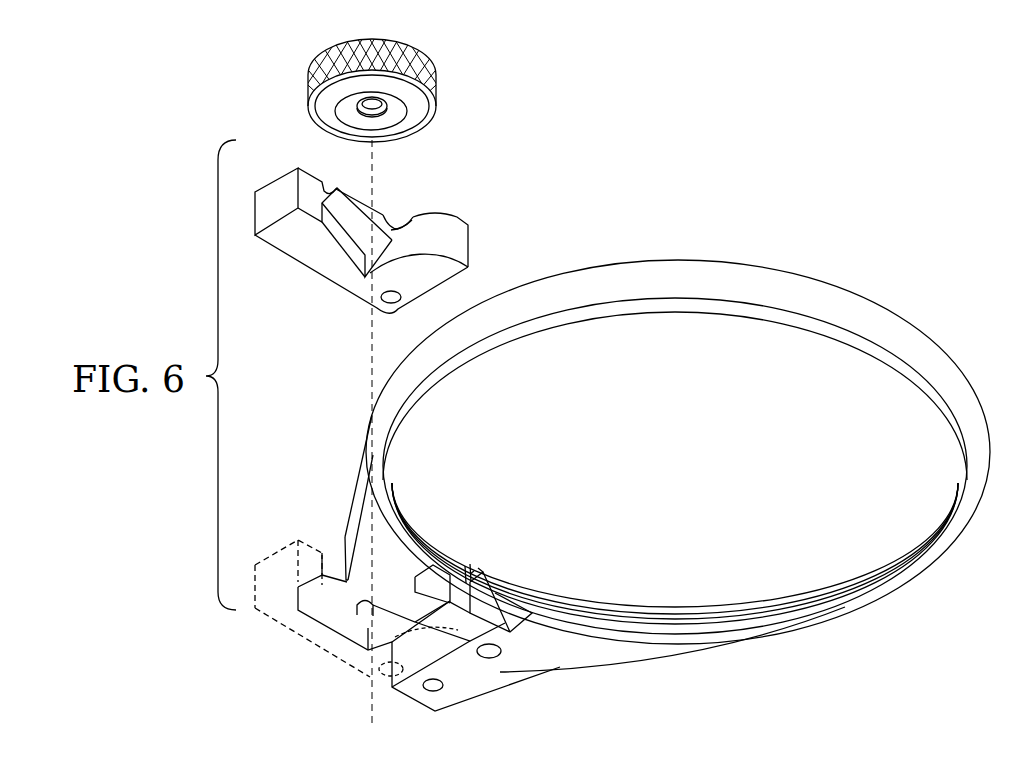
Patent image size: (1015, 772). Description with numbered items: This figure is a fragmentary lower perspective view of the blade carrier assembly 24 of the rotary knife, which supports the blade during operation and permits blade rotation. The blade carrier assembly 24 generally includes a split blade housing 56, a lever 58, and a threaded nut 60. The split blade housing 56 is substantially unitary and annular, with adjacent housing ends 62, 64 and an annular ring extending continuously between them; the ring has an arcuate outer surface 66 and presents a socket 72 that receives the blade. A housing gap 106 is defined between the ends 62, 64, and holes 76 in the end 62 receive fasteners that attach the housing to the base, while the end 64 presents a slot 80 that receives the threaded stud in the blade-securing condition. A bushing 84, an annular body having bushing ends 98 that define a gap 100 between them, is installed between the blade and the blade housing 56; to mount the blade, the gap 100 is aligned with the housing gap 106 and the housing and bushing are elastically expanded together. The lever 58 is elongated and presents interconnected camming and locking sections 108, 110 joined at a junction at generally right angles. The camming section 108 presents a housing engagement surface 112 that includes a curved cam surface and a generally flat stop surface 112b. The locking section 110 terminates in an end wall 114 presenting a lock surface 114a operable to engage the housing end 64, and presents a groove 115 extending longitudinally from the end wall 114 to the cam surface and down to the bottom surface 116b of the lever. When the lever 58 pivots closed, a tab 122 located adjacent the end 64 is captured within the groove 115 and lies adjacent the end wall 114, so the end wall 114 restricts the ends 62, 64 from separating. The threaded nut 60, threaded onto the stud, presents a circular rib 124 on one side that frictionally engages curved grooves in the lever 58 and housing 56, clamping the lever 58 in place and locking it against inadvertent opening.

The blade carrier assembly 24 is at (858, 310).
The split blade housing 56 is at (862, 605).
The lever 58 is at (448, 268).
The threaded nut 60 is at (437, 80).
The housing end 62 is at (440, 688).
The housing end 64 is at (338, 558).
The arcuate outer surface 66 is at (807, 293).
The socket 72 is at (510, 608).
The holes 76 is at (490, 658).
The slot 80 is at (365, 615).
The bushing 84 is at (690, 625).
The bushing ends 98 is at (465, 562).
The gap 100 is at (474, 562).
The housing gap 106 is at (450, 603).
The camming section 108 is at (413, 252).
The locking section 110 is at (302, 255).
The housing engagement surface 112 is at (425, 218).
The stop surface 112b is at (465, 238).
The end wall 114 is at (280, 238).
The lock surface 114a is at (330, 190).
The groove 115 is at (332, 248).
The bottom surface 116b is at (413, 292).
The tab 122 is at (318, 612).
The circular rib 124 is at (325, 118).